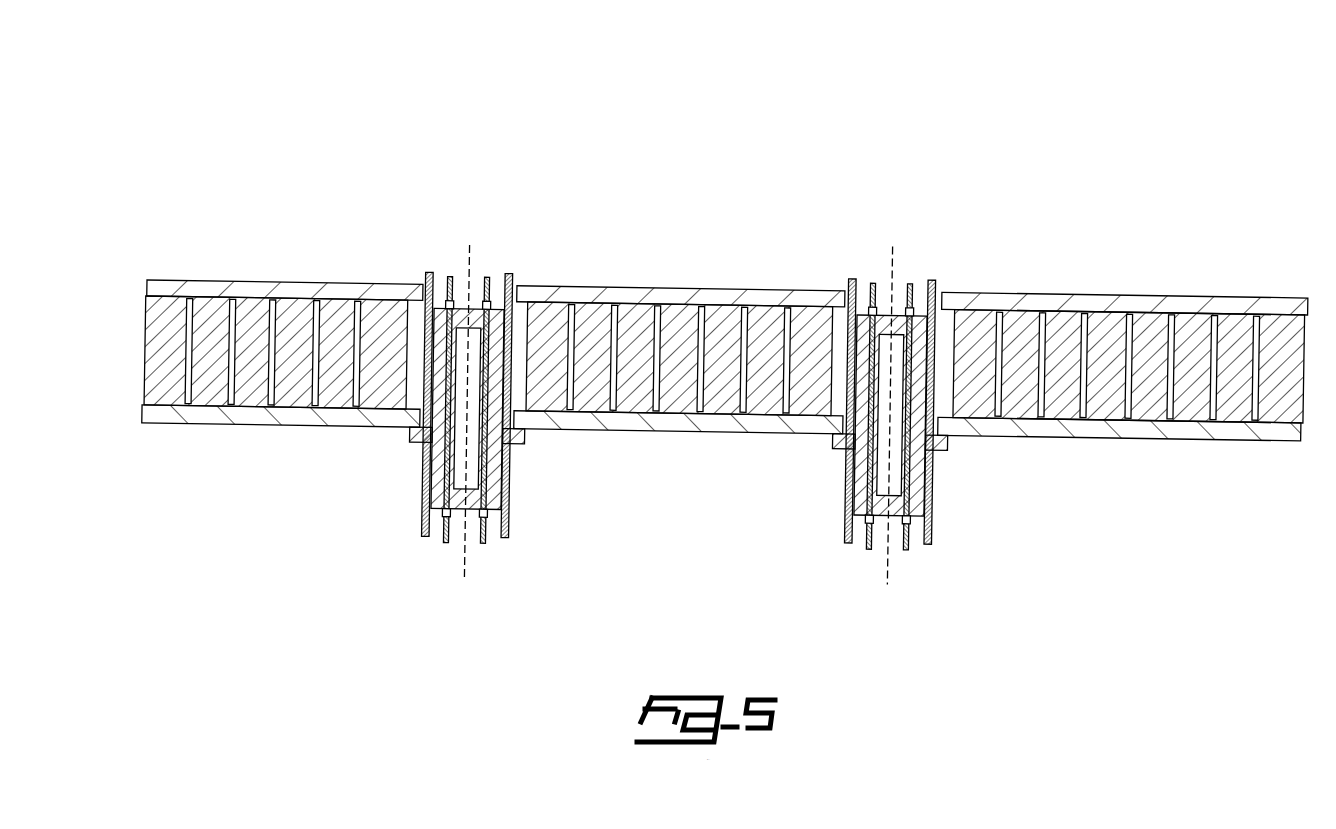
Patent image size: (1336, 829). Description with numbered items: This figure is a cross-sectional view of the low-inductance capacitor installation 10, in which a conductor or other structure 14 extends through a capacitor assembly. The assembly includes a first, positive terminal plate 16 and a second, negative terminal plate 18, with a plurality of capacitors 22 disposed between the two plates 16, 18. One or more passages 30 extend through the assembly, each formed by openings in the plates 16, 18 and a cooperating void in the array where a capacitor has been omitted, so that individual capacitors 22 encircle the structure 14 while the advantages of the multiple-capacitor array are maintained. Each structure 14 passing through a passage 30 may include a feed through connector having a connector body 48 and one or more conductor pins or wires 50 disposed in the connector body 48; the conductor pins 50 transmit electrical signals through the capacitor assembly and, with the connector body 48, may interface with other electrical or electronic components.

The low-inductance capacitor installation 10 is at (725, 348).
The structure 14 is at (512, 480).
The first terminal plate 16 is at (1027, 427).
The second terminal plate 18 is at (1165, 300).
The capacitors 22 is at (373, 303).
The passage 30 is at (856, 251).
The connector body 48 is at (428, 462).
The conductor pins 50 is at (458, 310).